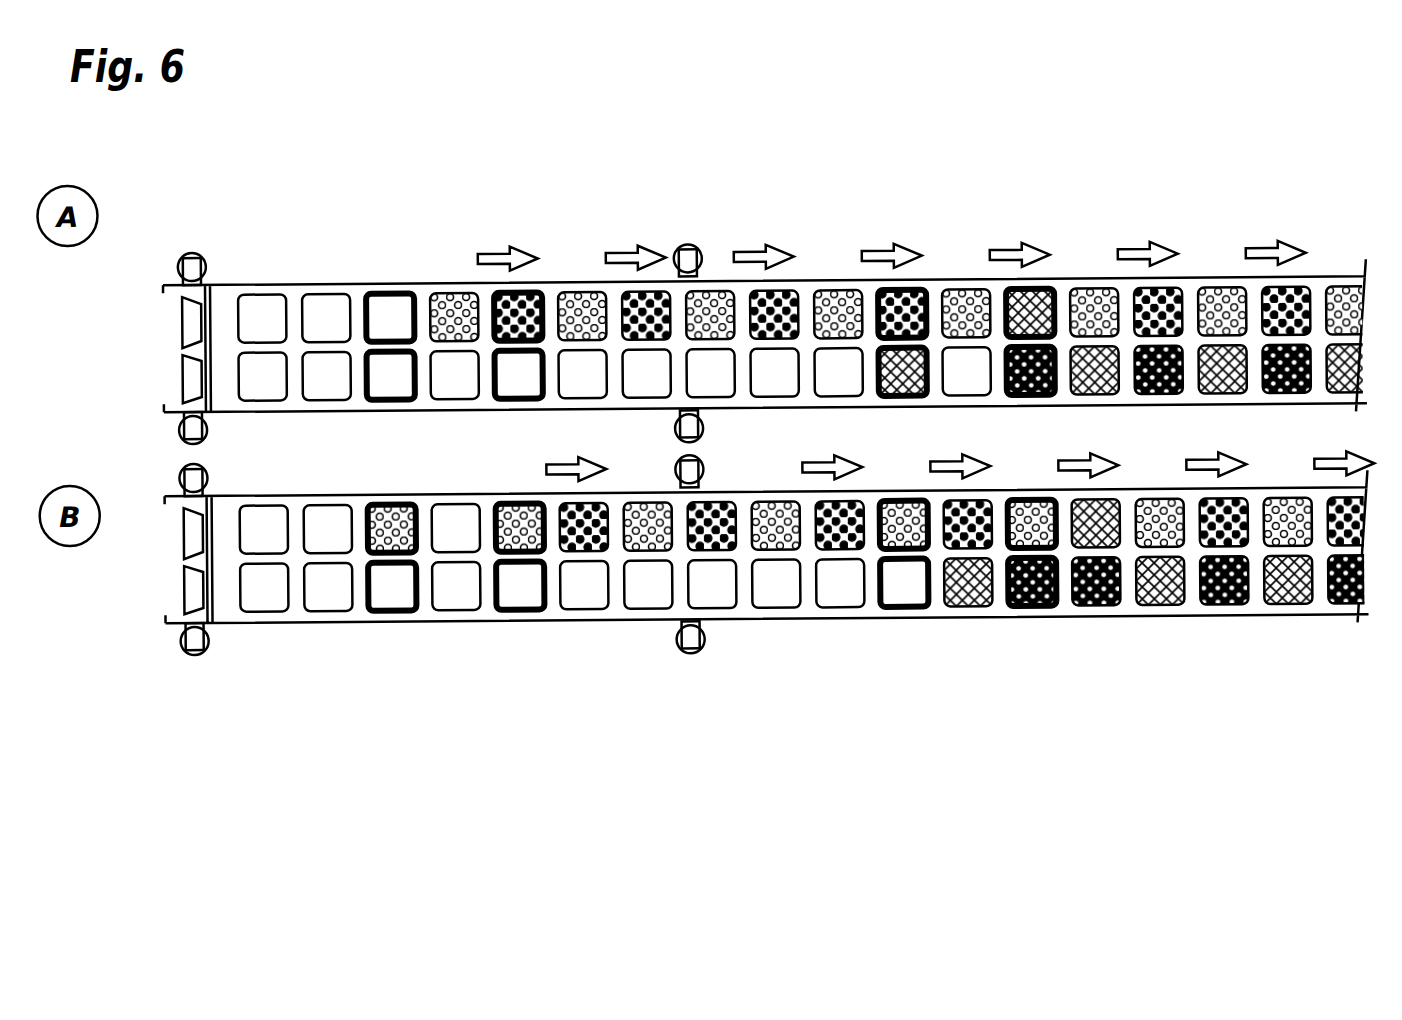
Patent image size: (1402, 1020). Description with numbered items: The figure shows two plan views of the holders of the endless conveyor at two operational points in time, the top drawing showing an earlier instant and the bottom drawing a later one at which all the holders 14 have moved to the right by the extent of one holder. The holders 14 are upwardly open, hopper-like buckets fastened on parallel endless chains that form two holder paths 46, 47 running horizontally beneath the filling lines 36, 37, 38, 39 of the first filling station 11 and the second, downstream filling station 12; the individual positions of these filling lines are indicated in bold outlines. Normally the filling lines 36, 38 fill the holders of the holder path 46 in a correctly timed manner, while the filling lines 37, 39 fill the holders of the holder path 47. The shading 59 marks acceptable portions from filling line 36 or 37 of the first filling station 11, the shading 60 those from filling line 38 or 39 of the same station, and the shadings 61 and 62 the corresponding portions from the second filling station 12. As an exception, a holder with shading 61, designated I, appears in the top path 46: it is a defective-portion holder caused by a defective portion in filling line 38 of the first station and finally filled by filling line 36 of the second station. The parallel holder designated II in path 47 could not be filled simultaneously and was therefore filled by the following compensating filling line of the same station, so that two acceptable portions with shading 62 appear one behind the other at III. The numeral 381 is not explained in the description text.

The first filling station 11 is at (472, 222).
The second filling station 12 is at (959, 237).
The holder 14 is at (264, 372).
The filling line 36 is at (382, 295).
The filling line 37 is at (385, 400).
The filling line 38 is at (500, 295).
The filling line 39 is at (510, 402).
The holder path 46 is at (185, 323).
The holder path 47 is at (190, 380).
The shading 59 is at (450, 295).
The shading 60 is at (540, 295).
The shading 61 is at (880, 400).
The shading 62 is at (1035, 400).
The intermediate region 381 is at (575, 560).
The defective-portion holder I is at (1074, 285).
The parallel holder II is at (1005, 402).
The acceptable portions III is at (1116, 631).